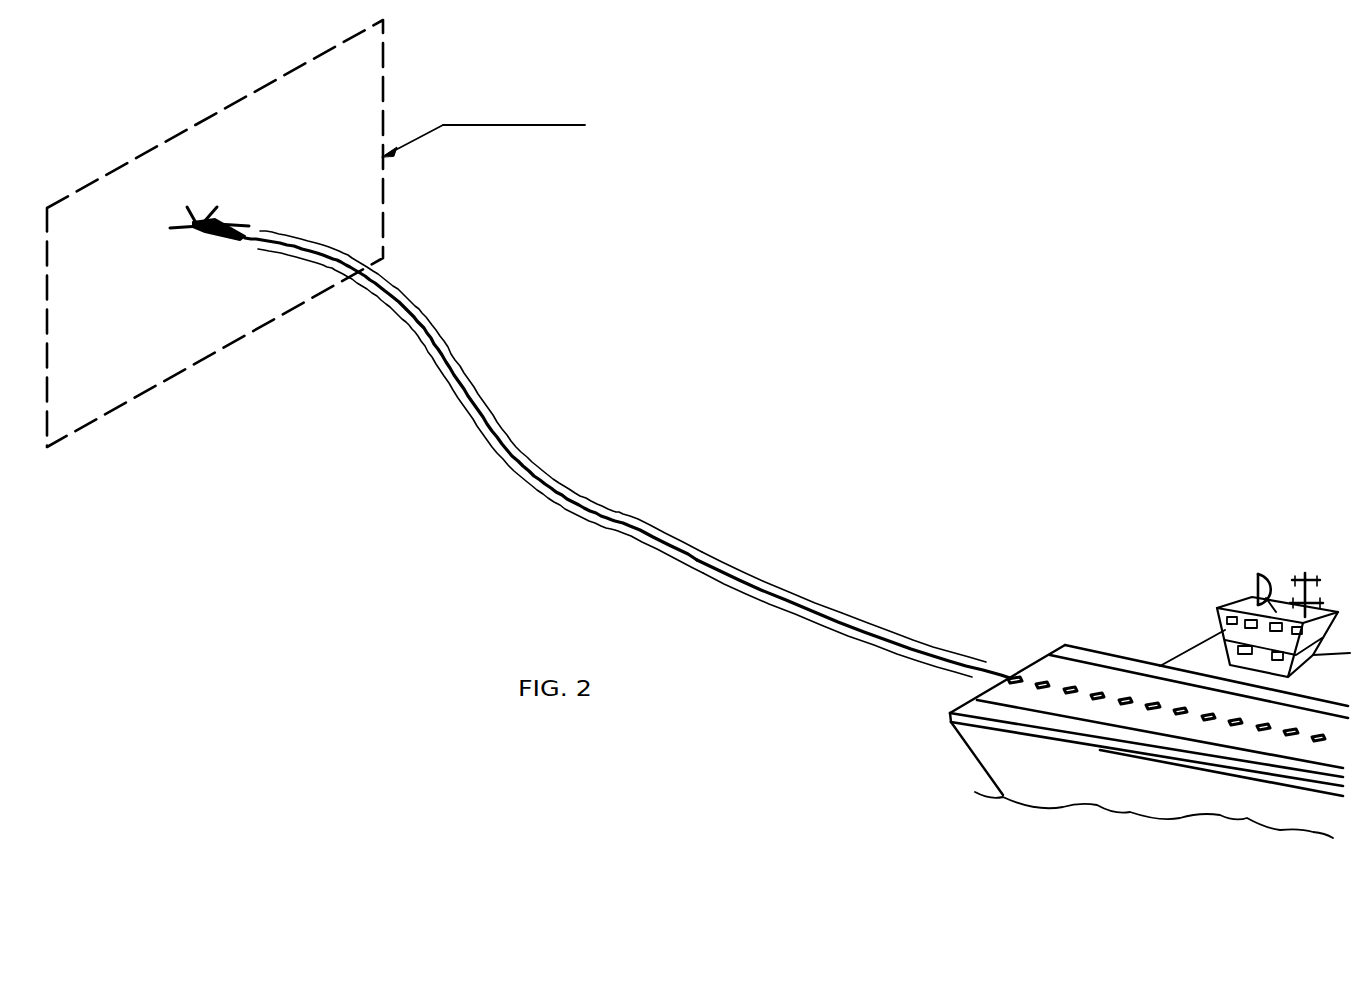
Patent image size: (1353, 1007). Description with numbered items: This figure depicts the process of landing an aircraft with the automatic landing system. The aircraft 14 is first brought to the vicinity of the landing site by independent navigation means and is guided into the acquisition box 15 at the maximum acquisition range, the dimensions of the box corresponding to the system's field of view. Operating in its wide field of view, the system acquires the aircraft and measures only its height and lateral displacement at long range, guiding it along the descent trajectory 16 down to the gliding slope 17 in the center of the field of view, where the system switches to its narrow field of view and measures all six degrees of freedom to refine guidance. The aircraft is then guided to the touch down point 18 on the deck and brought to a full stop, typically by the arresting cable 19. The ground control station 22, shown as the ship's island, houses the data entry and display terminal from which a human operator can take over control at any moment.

The aircraft 14 is at (226, 207).
The acquisition box 15 is at (370, 228).
The descent trajectory 16 is at (572, 473).
The gliding slope 17 is at (907, 645).
The touch down point 18 is at (1024, 677).
The arresting cable 19 is at (1075, 674).
The ground control station 22 is at (1232, 603).